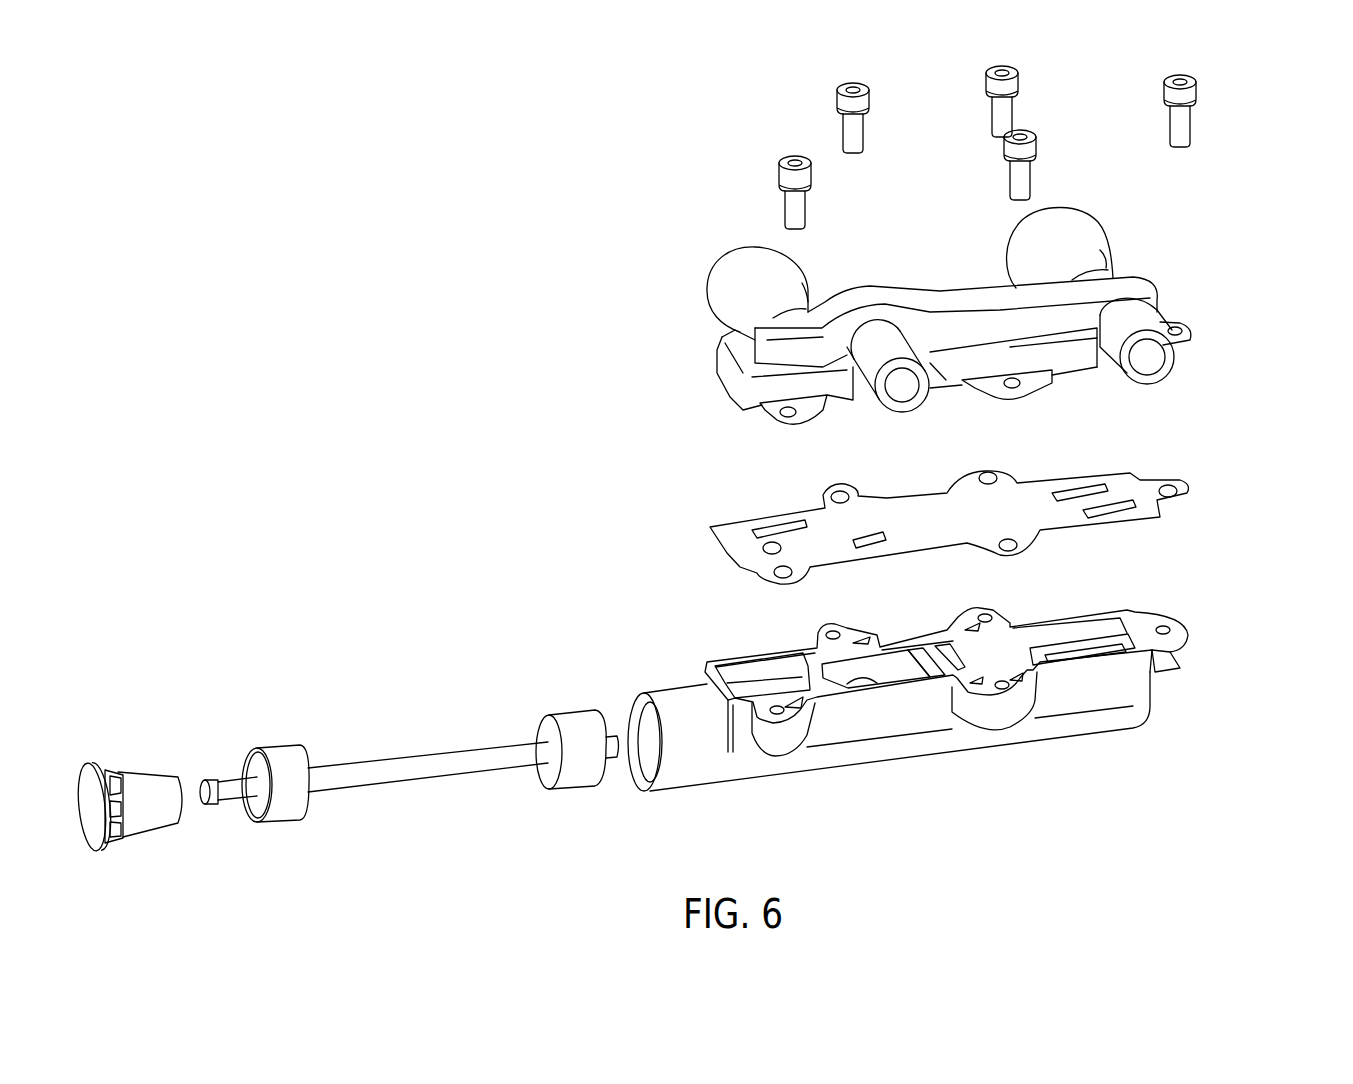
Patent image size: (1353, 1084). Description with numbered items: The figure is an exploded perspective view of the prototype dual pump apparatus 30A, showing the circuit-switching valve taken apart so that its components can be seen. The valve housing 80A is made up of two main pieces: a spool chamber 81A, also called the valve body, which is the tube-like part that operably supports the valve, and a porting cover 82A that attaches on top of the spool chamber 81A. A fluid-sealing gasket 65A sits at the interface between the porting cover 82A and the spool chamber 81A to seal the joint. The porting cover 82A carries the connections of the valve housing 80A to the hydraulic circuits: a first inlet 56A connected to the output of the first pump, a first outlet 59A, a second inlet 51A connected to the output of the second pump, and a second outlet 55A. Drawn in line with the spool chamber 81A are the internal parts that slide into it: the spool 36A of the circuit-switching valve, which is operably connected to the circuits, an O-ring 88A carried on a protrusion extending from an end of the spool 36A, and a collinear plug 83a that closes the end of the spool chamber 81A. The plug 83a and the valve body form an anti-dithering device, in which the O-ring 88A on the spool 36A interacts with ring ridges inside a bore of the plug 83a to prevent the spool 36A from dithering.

The apparatus 30A is at (338, 310).
The valve housing 80A is at (1269, 713).
The spool chamber 81A is at (868, 762).
The porting cover 82A is at (725, 371).
The gasket 65A is at (1133, 478).
The second inlet 51A is at (1073, 212).
The first inlet 56A is at (727, 265).
The second outlet 55A is at (1167, 368).
The first outlet 59A is at (917, 403).
The spool 36A is at (302, 744).
The O-ring 88A is at (213, 778).
The plug 83a is at (86, 763).